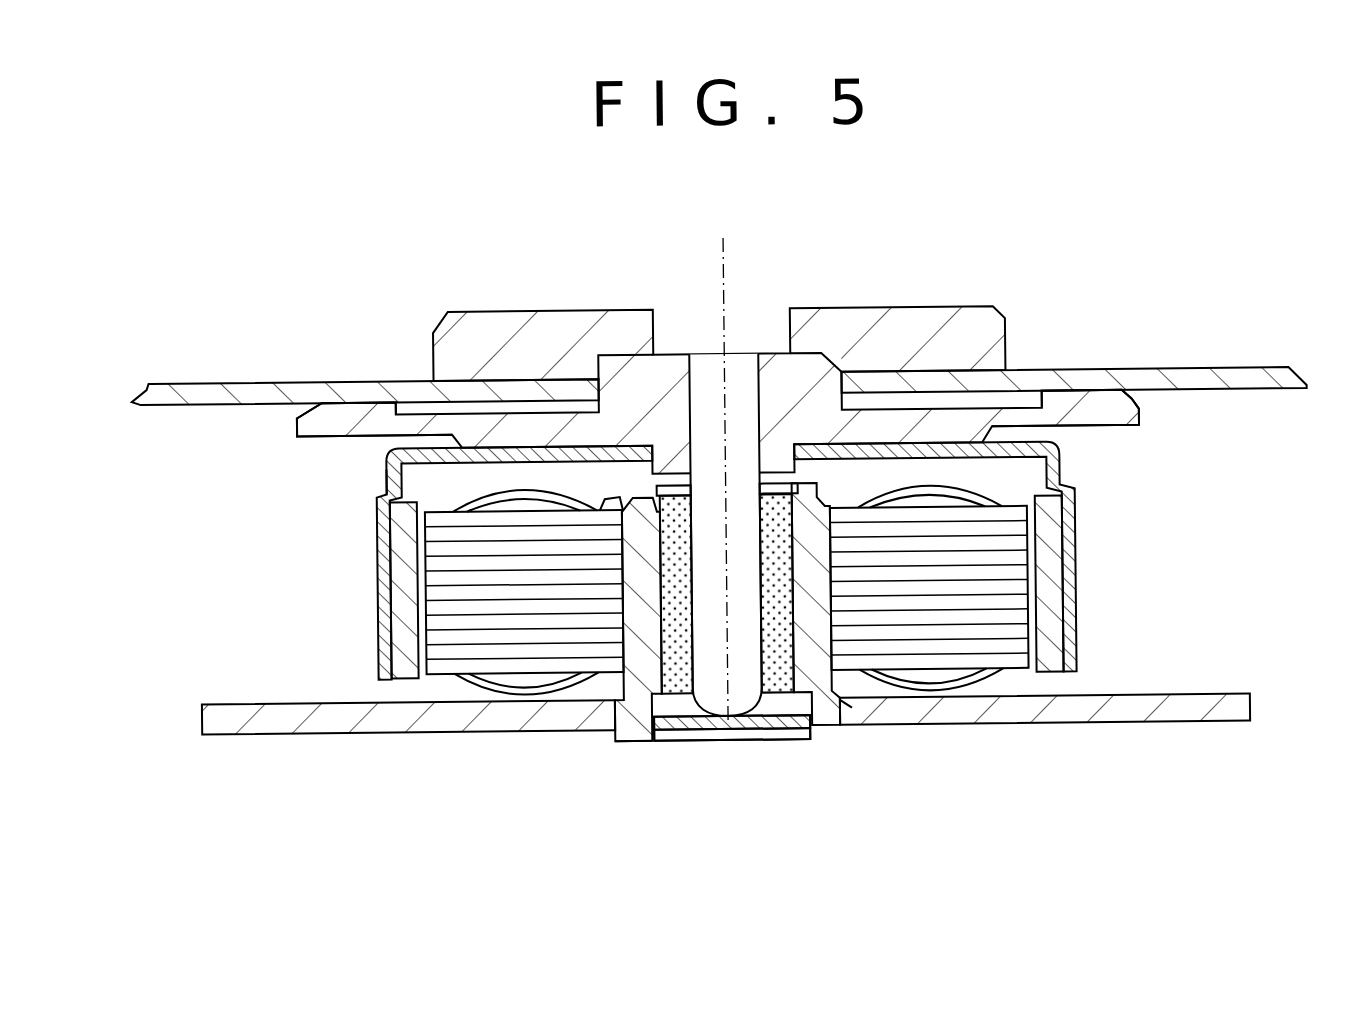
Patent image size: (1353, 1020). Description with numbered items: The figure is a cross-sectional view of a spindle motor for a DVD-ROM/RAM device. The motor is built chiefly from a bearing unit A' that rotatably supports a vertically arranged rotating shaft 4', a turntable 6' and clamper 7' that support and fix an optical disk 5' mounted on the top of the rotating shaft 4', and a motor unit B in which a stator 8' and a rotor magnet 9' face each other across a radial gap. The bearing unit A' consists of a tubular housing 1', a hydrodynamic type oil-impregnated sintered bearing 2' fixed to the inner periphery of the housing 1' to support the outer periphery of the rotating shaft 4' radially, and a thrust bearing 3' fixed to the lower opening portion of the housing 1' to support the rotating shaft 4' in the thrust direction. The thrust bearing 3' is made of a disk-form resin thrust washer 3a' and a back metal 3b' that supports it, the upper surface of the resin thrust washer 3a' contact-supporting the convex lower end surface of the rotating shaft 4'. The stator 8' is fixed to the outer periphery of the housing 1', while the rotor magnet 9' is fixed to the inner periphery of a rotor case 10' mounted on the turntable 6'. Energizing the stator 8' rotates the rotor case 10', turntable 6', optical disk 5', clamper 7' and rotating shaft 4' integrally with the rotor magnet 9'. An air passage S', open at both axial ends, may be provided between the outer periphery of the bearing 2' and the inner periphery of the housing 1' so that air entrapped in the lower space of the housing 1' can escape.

The housing 1' is at (725, 653).
The hydrodynamic type oil-impregnated sintered bearing 2' is at (743, 653).
The thrust bearing 3' is at (731, 770).
The resin thrust washer 3a' is at (733, 805).
The back metal 3b' is at (738, 812).
The rotating shaft 4' is at (759, 465).
The optical disk 5' is at (718, 337).
The turntable 6' is at (766, 445).
The clamper 7' is at (718, 471).
The stator 8' is at (660, 591).
The rotor magnet 9' is at (677, 587).
The rotor case 10' is at (659, 565).
The air passage S' is at (910, 775).
The bearing unit A' is at (598, 800).
The motor unit B is at (345, 502).